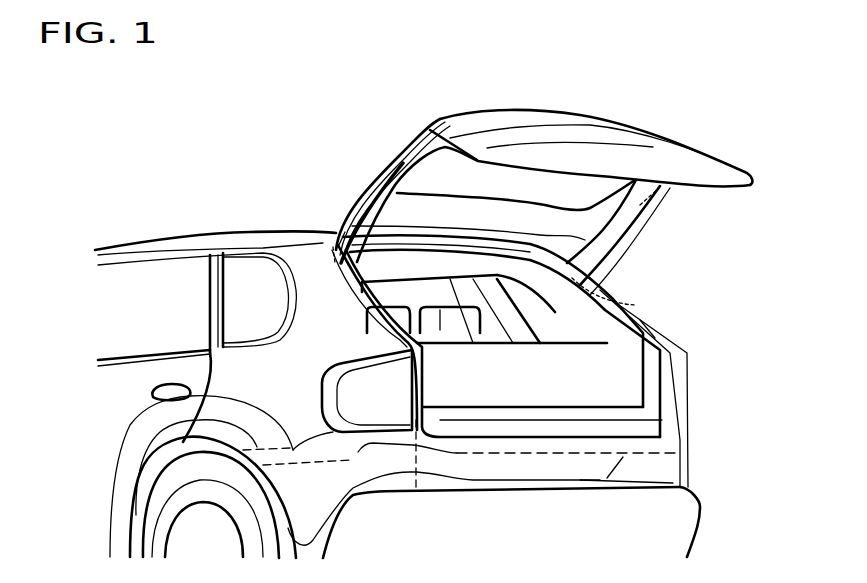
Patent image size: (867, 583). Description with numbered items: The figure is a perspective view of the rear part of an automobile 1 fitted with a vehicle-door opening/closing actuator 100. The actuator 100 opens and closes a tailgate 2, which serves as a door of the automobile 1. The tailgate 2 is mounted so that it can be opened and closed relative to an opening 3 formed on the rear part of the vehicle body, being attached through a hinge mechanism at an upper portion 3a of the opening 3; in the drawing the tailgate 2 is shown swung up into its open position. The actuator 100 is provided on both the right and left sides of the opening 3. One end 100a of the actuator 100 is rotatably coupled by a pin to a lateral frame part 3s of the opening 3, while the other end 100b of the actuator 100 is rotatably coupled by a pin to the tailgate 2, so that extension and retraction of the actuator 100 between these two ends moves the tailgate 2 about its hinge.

The automobile 1 is at (236, 228).
The tailgate 2 is at (690, 153).
The opening 3 is at (612, 340).
The upper portion of the opening 3a is at (340, 244).
The lateral frame part of the opening 3s is at (330, 247).
The vehicle-door opening/closing actuator 100 is at (623, 242).
The one end of the actuator 100a is at (635, 305).
The other end of the actuator 100b is at (658, 193).